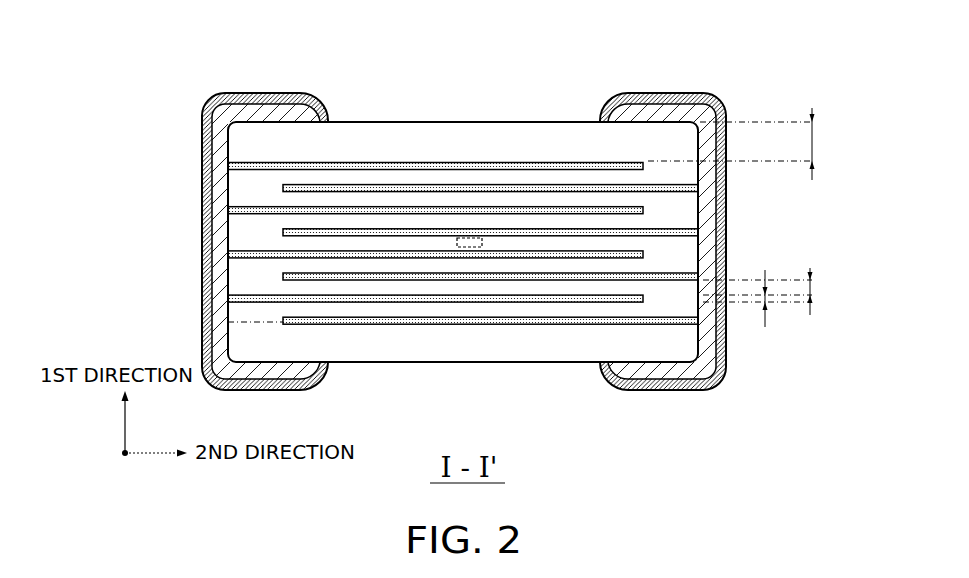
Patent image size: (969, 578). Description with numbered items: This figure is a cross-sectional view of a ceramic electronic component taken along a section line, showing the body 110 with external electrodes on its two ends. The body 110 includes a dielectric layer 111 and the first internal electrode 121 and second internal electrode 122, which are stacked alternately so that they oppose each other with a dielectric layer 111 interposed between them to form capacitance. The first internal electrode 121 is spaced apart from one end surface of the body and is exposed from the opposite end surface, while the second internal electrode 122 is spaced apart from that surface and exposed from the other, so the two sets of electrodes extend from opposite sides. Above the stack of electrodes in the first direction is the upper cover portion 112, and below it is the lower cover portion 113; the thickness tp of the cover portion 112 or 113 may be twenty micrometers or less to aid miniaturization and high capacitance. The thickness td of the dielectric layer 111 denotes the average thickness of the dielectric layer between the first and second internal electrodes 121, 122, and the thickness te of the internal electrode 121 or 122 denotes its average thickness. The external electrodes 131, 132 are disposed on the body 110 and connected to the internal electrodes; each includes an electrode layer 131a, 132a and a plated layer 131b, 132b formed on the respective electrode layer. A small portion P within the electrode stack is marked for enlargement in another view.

The body 110 is at (398, 120).
The dielectric layer 111 is at (350, 198).
The upper cover portion 112 is at (470, 138).
The lower cover portion 113 is at (380, 347).
The first internal electrode 121 is at (528, 163).
The second internal electrode 122 is at (585, 185).
The external electrode 131 is at (189, 241).
The electrode layer 131a is at (222, 172).
The plated layer 131b is at (212, 200).
The external electrode 132 is at (741, 241).
The electrode layer 132a is at (707, 217).
The plated layer 132b is at (718, 238).
The portion P is at (463, 250).
The thickness of the cover portion tp is at (743, 144).
The thickness of the dielectric layer td is at (770, 291).
The thickness of the internal electrode te is at (757, 300).